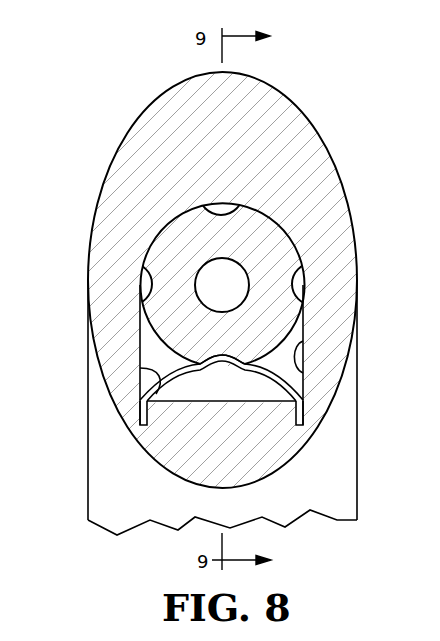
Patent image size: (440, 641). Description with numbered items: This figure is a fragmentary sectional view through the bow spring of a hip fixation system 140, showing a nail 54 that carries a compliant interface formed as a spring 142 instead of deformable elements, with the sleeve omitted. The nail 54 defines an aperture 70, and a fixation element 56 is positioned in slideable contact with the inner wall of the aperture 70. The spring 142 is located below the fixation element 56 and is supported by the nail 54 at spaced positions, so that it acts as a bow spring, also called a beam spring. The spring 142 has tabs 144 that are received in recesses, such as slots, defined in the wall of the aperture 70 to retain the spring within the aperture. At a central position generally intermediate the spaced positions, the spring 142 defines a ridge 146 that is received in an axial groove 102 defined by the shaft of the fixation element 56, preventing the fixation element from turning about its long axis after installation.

The hip fixation system 140 is at (110, 115).
The nail 54 is at (331, 131).
The fixation element 56 is at (167, 209).
The axial groove 102 is at (220, 212).
The aperture 70 is at (303, 372).
The spring 142 is at (140, 370).
The tabs 144 is at (141, 428).
The ridge 146 is at (223, 357).